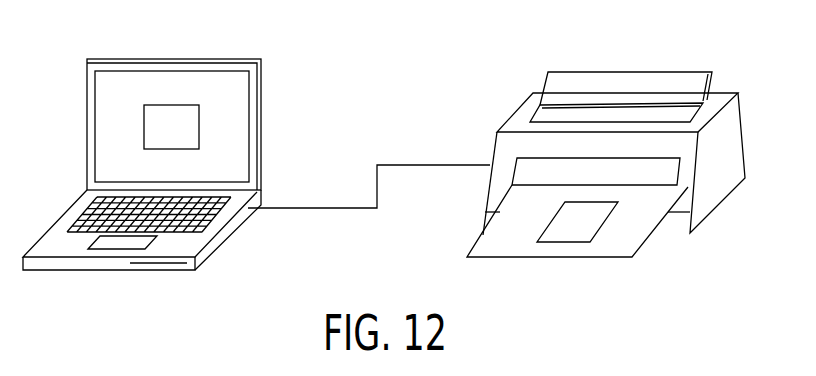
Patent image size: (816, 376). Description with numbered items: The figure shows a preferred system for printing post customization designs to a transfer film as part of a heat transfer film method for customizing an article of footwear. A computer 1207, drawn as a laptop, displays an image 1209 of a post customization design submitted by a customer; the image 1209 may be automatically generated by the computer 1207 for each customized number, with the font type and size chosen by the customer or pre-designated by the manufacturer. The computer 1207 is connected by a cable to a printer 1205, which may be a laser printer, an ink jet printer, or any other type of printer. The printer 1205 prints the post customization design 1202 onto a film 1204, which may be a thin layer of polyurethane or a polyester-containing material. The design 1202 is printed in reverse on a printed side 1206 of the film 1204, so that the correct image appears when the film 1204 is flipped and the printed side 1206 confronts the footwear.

The post customization design 1202 is at (580, 229).
The film 1204 is at (608, 217).
The printer 1205 is at (512, 126).
The printed side 1206 is at (550, 237).
The computer 1207 is at (220, 60).
The image 1209 is at (155, 110).